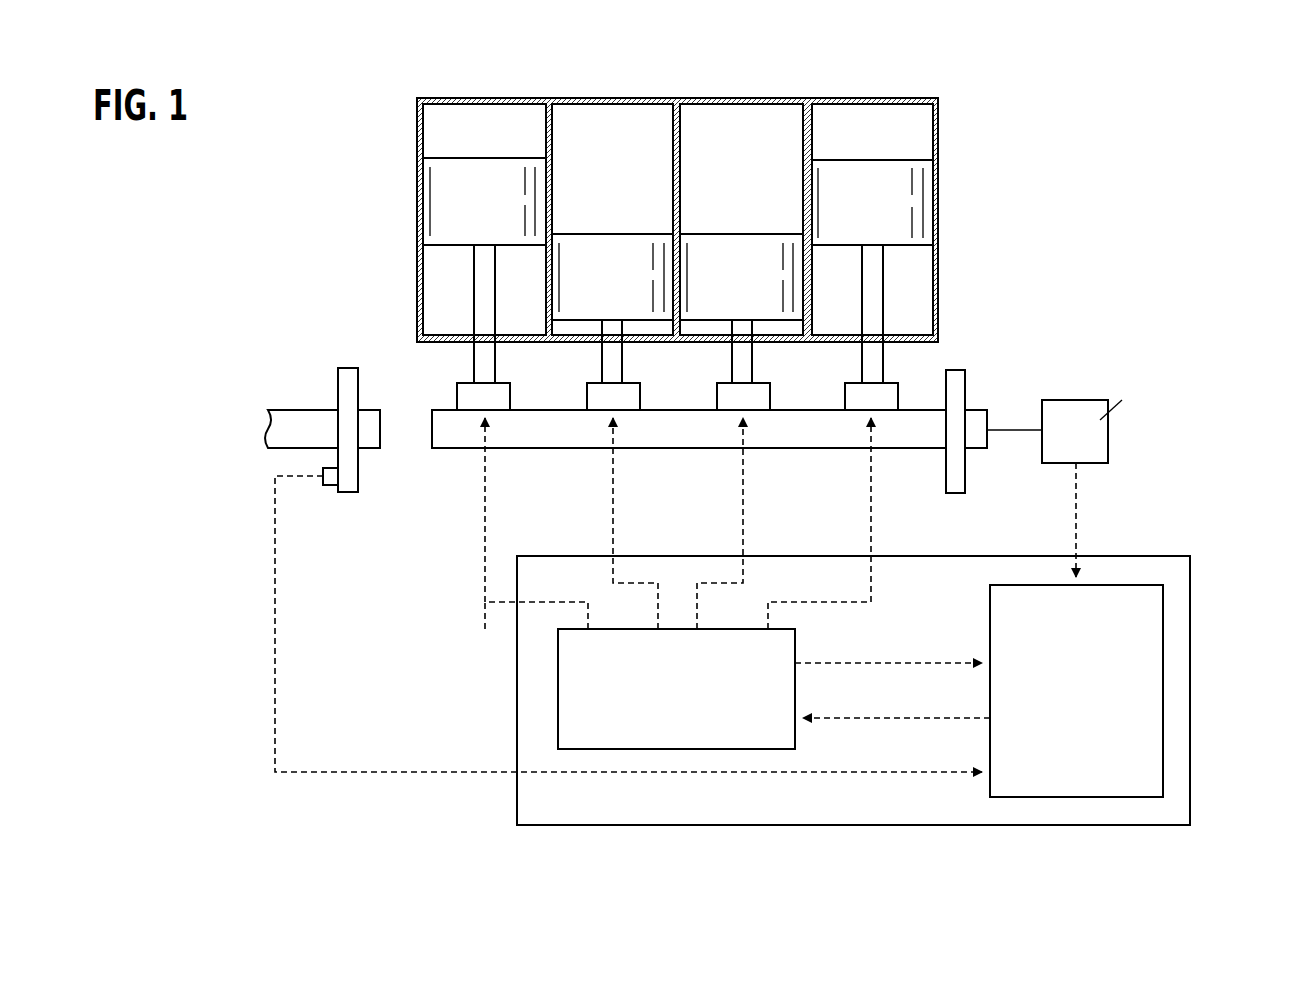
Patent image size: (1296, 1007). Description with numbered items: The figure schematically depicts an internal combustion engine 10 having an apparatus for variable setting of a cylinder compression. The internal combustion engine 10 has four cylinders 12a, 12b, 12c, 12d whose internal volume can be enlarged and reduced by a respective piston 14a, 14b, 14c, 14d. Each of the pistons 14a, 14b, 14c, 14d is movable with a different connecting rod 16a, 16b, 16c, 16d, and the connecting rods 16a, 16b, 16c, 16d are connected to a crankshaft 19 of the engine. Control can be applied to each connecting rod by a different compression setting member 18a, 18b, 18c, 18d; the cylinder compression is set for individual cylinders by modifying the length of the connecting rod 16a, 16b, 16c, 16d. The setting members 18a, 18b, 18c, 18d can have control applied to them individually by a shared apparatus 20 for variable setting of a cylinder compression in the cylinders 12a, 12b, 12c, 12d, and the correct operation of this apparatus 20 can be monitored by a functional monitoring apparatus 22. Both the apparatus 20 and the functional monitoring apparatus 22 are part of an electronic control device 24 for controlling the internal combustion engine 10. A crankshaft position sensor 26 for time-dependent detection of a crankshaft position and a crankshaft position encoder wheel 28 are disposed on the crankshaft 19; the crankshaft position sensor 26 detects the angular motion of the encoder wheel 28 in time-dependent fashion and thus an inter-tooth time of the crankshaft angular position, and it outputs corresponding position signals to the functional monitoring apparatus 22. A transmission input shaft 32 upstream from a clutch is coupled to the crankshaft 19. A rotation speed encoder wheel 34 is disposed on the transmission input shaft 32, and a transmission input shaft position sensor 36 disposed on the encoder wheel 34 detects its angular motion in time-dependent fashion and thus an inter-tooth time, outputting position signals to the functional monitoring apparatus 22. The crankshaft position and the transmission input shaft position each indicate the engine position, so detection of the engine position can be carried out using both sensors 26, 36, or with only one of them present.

The internal combustion engine 10 is at (482, 54).
The cylinder 12a is at (433, 129).
The cylinder 12b is at (617, 120).
The cylinder 12c is at (750, 120).
The cylinder 12d is at (918, 131).
The piston 14a is at (433, 194).
The piston 14b is at (618, 250).
The piston 14c is at (751, 250).
The piston 14d is at (918, 196).
The connecting rod 16a is at (474, 361).
The connecting rod 16b is at (602, 361).
The connecting rod 16c is at (732, 361).
The connecting rod 16d is at (862, 361).
The compression setting member 18a is at (468, 396).
The compression setting member 18b is at (628, 402).
The compression setting member 18c is at (755, 402).
The compression setting member 18d is at (887, 400).
The crankshaft 19 is at (905, 440).
The apparatus for variable setting of a cylinder compression 20 is at (570, 676).
The functional monitoring apparatus 22 is at (1150, 643).
The electronic control device 24 is at (1175, 697).
The crankshaft position sensor 26 is at (1095, 431).
The crankshaft position encoder wheel 28 is at (958, 477).
The transmission input shaft 32 is at (292, 410).
The rotation speed encoder wheel 34 is at (348, 493).
The transmission input shaft position sensor 36 is at (328, 487).